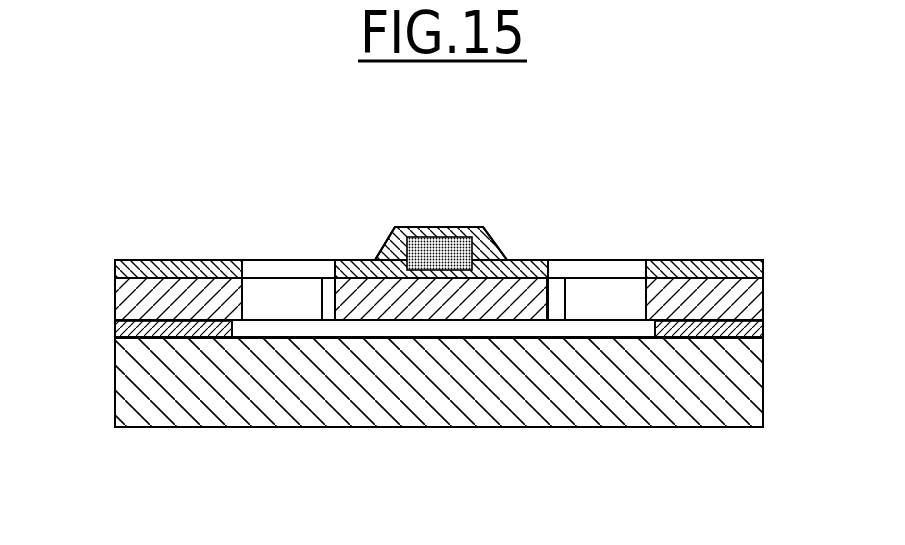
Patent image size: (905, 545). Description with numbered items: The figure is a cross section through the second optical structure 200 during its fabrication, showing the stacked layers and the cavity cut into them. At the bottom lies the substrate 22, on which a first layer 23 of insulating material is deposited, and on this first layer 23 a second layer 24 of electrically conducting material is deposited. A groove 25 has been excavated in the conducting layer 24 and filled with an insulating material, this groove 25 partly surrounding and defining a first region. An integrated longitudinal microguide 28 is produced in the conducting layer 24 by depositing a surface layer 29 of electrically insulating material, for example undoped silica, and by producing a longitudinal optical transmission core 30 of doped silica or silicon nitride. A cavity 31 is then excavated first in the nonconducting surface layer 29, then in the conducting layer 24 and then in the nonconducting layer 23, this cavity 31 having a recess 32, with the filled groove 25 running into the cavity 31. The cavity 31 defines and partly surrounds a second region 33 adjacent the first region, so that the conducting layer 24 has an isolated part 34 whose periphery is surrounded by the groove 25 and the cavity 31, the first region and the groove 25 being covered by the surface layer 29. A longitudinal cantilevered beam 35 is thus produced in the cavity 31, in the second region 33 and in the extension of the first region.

The second optical structure 200 is at (181, 230).
The substrate 22 is at (742, 379).
The first layer 23 is at (766, 328).
The second layer 24 is at (750, 296).
The groove 25 is at (306, 298).
The integrated longitudinal microguide 28 is at (459, 215).
The surface layer 29 is at (766, 268).
The longitudinal optical transmission core 30 is at (437, 228).
The cavity 31 is at (603, 267).
The recess 32 is at (495, 328).
The second region 33 is at (359, 262).
The isolated part 34 is at (538, 240).
The longitudinal cantilevered beam 35 is at (410, 300).